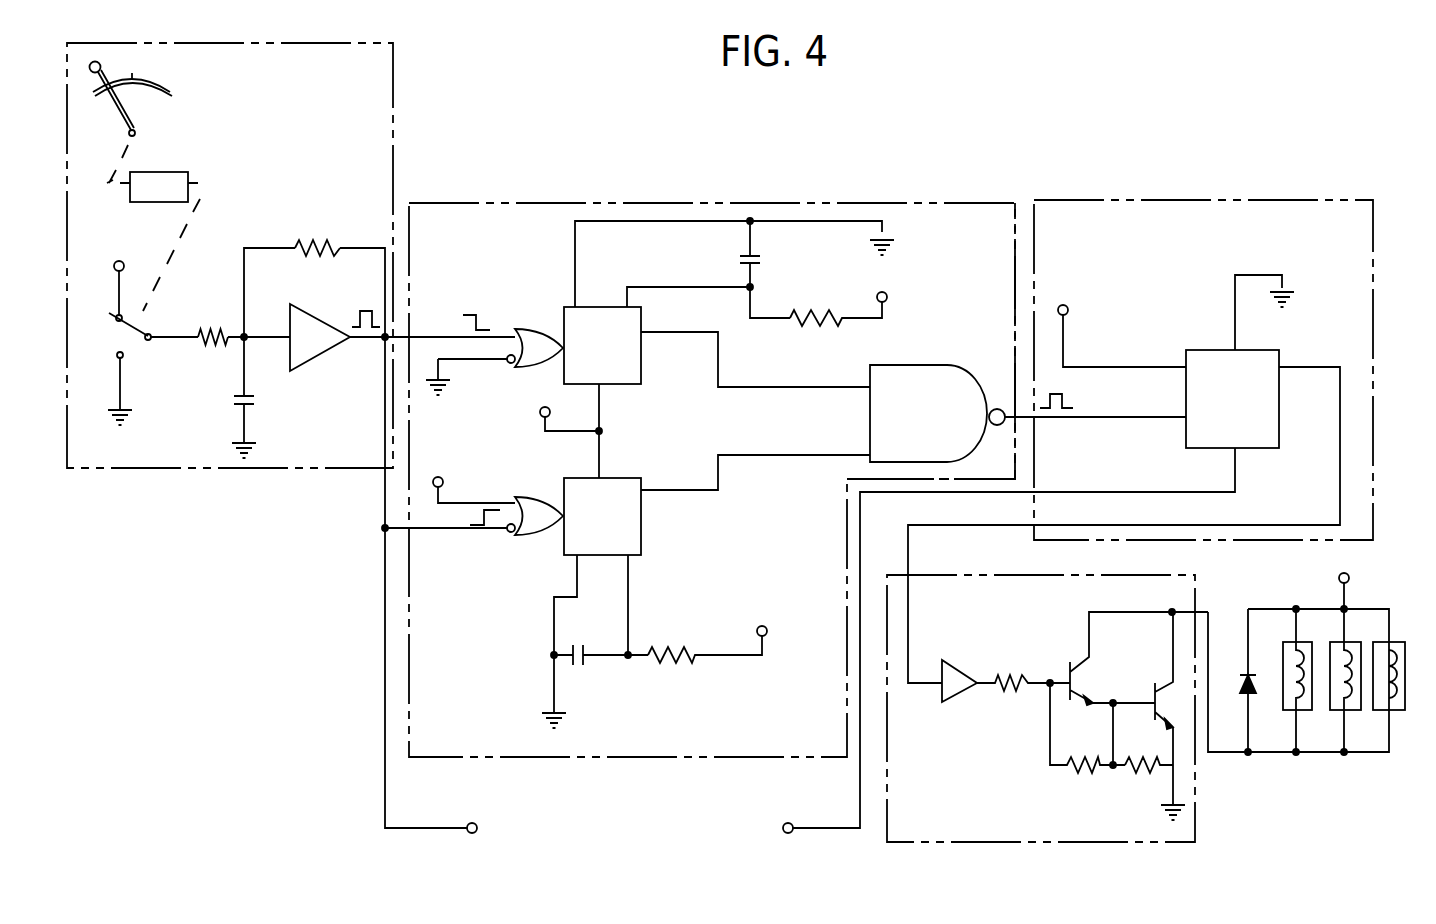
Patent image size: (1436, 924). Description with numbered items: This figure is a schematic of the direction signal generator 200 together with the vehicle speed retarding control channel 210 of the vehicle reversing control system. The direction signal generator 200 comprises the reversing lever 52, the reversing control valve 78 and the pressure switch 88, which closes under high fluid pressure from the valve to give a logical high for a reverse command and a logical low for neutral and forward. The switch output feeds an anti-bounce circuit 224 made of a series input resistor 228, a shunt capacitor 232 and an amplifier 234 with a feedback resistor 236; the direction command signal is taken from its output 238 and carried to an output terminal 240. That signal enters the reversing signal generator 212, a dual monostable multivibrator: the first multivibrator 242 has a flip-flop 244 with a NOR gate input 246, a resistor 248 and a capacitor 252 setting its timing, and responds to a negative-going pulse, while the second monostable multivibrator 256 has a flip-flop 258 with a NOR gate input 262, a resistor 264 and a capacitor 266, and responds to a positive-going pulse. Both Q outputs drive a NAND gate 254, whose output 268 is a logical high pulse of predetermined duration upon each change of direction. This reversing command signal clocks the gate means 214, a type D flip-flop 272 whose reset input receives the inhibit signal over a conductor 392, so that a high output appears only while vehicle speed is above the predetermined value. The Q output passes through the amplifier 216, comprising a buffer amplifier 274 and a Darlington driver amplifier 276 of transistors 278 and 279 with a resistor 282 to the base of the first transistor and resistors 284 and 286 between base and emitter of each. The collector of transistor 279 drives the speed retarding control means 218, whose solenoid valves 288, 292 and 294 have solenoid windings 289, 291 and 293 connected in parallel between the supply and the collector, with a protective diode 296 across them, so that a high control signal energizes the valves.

The reversing lever 52 is at (155, 76).
The reversing control valve 78 is at (160, 172).
The pressure switch 88 is at (122, 333).
The direction signal generator 200 is at (263, 43).
The vehicle speed retarding control channel 210 is at (491, 166).
The reversing signal generator 212 is at (720, 200).
The gate means 214 is at (1162, 197).
The amplifier 216 is at (993, 573).
The speed retarding control means 218 is at (1306, 654).
The anti-bounce circuit 224 is at (226, 355).
The series input resistor 228 is at (211, 330).
The shunt capacitor 232 is at (250, 406).
The amplifier 234 is at (306, 302).
The feedback resistor 236 is at (320, 240).
The output 238 is at (380, 344).
The output terminal 240 is at (478, 834).
The first multivibrator 242 is at (551, 318).
The flip-flop 244 is at (601, 307).
The NOR gate input 246 is at (524, 368).
The resistor 248 is at (808, 312).
The capacitor 252 is at (745, 258).
The NAND gate 254 is at (922, 365).
The monostable multivibrator 256 is at (553, 488).
The flip-flop 258 is at (617, 478).
The NOR gate input 262 is at (525, 538).
The resistor 264 is at (672, 665).
The capacitor 266 is at (586, 662).
The NAND gate output 268 is at (1033, 425).
The type D flip-flop 272 is at (1207, 348).
The buffer amplifier 274 is at (950, 700).
The driver amplifier 276 is at (1115, 704).
The transistor 278 is at (1086, 672).
The transistor 279 is at (1160, 715).
The resistor 282 is at (1005, 700).
The resistor 284 is at (1075, 773).
The resistor 286 is at (1135, 773).
The solenoid valve 288 is at (1288, 642).
The solenoid winding 289 is at (1290, 706).
The solenoid winding 291 is at (1338, 706).
The solenoid valve 292 is at (1338, 642).
The solenoid winding 293 is at (1384, 706).
The solenoid valve 294 is at (1382, 642).
The protective diode 296 is at (1245, 680).
The conductor 392 is at (789, 834).